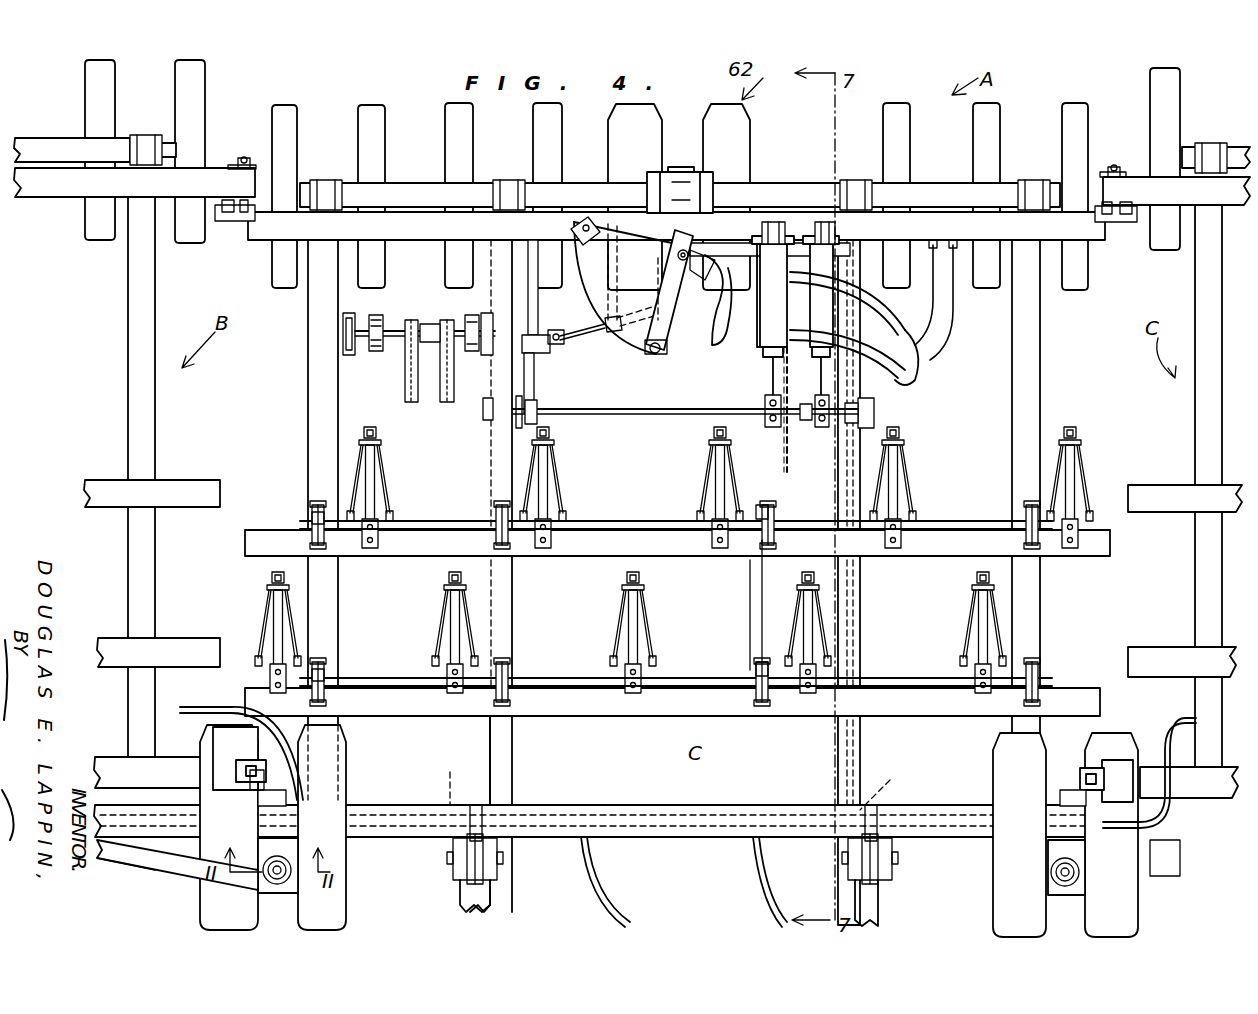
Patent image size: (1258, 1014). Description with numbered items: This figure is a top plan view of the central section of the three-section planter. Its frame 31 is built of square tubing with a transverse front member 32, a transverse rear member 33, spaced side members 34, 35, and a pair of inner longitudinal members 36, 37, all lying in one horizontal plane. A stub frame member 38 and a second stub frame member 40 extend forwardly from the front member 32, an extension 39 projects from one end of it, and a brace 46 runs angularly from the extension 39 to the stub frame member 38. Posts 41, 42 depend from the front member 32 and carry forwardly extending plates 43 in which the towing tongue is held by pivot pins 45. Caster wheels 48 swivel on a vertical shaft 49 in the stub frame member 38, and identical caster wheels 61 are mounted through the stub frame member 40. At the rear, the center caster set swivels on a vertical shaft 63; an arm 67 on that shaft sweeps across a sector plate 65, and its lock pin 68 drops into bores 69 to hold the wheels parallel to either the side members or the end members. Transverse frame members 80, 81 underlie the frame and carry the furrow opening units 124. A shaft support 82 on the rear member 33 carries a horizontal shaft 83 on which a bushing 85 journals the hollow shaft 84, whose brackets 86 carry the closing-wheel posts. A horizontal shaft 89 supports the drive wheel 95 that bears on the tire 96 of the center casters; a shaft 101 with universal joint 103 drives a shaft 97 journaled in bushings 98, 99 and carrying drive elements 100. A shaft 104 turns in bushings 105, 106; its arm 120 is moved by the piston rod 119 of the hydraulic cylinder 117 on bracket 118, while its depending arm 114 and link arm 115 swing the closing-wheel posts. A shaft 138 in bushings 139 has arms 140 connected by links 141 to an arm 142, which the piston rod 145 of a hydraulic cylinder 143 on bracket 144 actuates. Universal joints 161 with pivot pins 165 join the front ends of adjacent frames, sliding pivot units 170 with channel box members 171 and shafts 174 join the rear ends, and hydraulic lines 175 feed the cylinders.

The frame 31 is at (112, 750).
The transverse front member 32 is at (172, 760).
The transverse rear member 33 is at (40, 198).
The side member 34 is at (308, 416).
The side member 35 is at (152, 430).
The longitudinal member 36 is at (490, 478).
The longitudinal member 37 is at (860, 612).
The stub frame member 38 is at (272, 850).
The extension 39 is at (120, 845).
The stub frame member 40 is at (1080, 858).
The post 41 is at (450, 783).
The post 42 is at (892, 788).
The plates 43 is at (453, 876).
The pivot pins 45 is at (450, 858).
The brace 46 is at (165, 866).
The caster wheels 48 is at (346, 914).
The vertical shaft 49 is at (278, 886).
The caster wheels 61 is at (993, 858).
The vertical shaft 63 is at (676, 260).
The sector plate 65 is at (628, 328).
The arm 67 is at (668, 363).
The lock pin 68 is at (650, 360).
The bores 69 is at (588, 245).
The transverse frame member 80 is at (178, 640).
The second frame member 81 is at (185, 482).
The shaft support 82 is at (700, 232).
The horizontal shaft 83 is at (678, 170).
The hollow shaft 84 is at (36, 145).
The bushing 85 is at (700, 192).
The brackets 86 is at (145, 134).
The horizontal shaft 89 is at (700, 290).
The drive wheel 95 is at (712, 320).
The tire 96 is at (740, 140).
The shaft 97 is at (392, 352).
The bushing 98 is at (350, 314).
The bushing 99 is at (476, 314).
The drive elements 100 is at (428, 390).
The shaft 101 is at (606, 334).
The universal joint 103 is at (556, 346).
The shaft 104 is at (600, 418).
The bushing 105 is at (486, 422).
The bushing 106 is at (874, 410).
The arm 114 is at (536, 386).
The link arm 115 is at (540, 332).
The hydraulic cylinder 117 is at (835, 318).
The bracket 118 is at (822, 222).
The piston rod 119 is at (833, 380).
The arm 120 is at (790, 448).
The furrow opening units 124 is at (380, 470).
The shaft 138 is at (326, 548).
The bushings 139 is at (340, 556).
The arm 140 is at (766, 540).
The link 141 is at (775, 478).
The arm 142 is at (765, 406).
The hydraulic cylinder 143 is at (760, 355).
The bracket 144 is at (774, 220).
The piston rod 145 is at (770, 384).
The universal joints 161 is at (1158, 750).
The pivot pin 165 is at (1122, 704).
The sliding pivot unit 170 is at (244, 135).
The vertical channel box member 171 is at (236, 224).
The shaft 174 is at (240, 162).
The hydraulic lines 175 is at (192, 706).